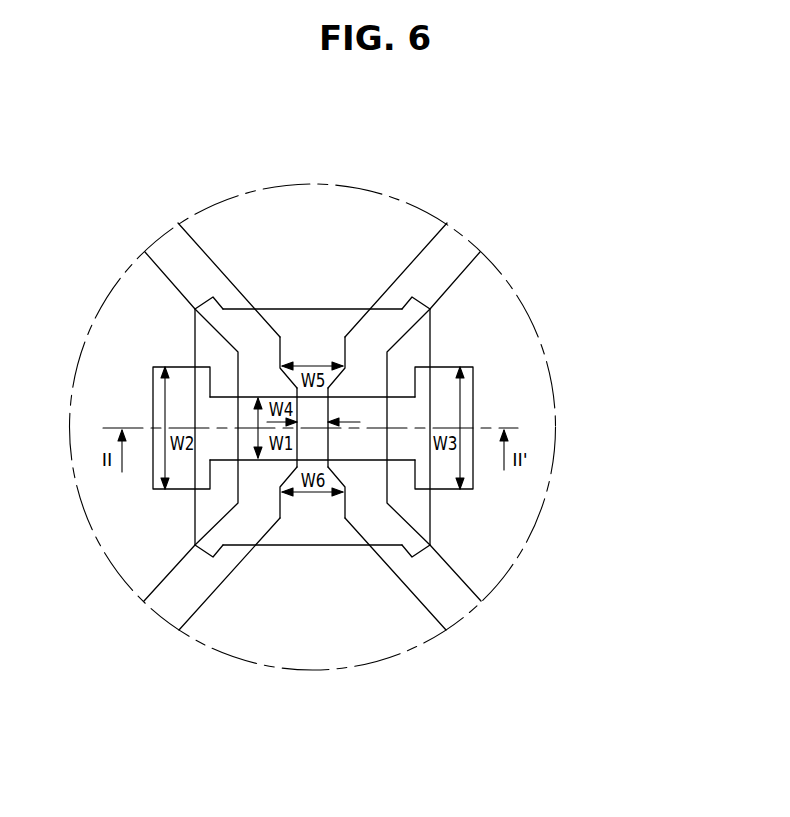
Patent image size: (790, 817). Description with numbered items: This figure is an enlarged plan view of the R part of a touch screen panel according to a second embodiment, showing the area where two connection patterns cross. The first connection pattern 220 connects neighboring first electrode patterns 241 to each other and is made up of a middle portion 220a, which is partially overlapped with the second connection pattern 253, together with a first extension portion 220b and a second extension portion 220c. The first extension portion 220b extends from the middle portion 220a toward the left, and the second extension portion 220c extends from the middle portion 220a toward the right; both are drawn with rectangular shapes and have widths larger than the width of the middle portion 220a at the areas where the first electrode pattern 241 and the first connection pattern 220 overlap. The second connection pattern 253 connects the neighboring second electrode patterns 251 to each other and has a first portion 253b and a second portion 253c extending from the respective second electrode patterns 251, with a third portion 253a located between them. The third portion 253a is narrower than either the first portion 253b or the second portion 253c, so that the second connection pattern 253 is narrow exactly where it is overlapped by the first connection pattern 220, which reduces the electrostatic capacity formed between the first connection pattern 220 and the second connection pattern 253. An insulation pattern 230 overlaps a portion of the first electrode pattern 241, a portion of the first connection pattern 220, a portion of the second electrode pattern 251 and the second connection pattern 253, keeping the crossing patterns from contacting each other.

The R part R is at (208, 193).
The insulation pattern 230 is at (385, 322).
The first electrode pattern 241 is at (121, 540).
The second electrode pattern 251 is at (289, 270).
The second connection pattern 253 is at (632, 338).
The third portion 253a is at (318, 412).
The first portion 253b is at (318, 355).
The second portion 253c is at (325, 503).
The first connection pattern 220 is at (193, 733).
The middle portion 220a is at (307, 440).
The first extension portion 220b is at (172, 480).
The second extension portion 220c is at (453, 480).